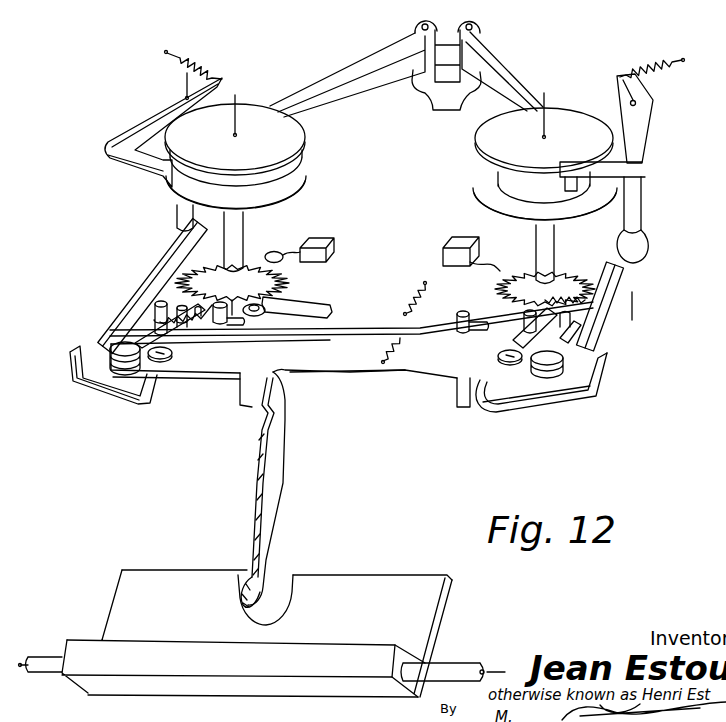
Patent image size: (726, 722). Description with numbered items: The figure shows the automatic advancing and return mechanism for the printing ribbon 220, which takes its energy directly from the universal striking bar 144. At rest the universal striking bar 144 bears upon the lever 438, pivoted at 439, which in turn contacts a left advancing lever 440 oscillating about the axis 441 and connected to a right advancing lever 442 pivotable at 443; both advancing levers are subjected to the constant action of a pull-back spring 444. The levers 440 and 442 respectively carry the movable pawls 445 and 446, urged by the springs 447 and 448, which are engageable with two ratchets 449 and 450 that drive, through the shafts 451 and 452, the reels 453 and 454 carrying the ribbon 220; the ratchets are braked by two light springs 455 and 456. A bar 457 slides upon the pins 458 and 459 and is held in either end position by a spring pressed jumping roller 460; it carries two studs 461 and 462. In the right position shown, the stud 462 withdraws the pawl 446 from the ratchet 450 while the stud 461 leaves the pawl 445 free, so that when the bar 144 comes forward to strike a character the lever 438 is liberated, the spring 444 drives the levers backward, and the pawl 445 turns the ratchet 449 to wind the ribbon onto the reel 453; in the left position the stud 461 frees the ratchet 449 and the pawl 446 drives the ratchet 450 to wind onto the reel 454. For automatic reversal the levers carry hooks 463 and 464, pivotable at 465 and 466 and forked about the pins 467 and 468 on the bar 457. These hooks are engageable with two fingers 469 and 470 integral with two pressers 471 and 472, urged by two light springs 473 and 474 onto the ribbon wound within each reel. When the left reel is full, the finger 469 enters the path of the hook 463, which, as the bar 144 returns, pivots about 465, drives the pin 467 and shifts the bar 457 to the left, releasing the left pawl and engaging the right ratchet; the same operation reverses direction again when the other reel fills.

The universal striking bar 144 is at (430, 613).
The printing ribbon 220 is at (375, 88).
The lever 438 is at (268, 530).
The pivot 439 is at (300, 483).
The left advancing lever 440 is at (293, 360).
The axis 441 is at (203, 373).
The right advancing lever 442 is at (445, 373).
The pivot 443 is at (463, 408).
The pull-back spring 444 is at (407, 302).
The movable pawl 445 is at (147, 310).
The movable pawl 446 is at (585, 318).
The spring 447 is at (183, 313).
The spring 448 is at (603, 293).
The ratchet 449 is at (260, 251).
The ratchet 450 is at (565, 265).
The shaft 451 is at (245, 224).
The shaft 452 is at (540, 238).
The reel 453 is at (292, 181).
The reel 454 is at (490, 189).
The light spring 455 is at (322, 240).
The light spring 456 is at (480, 270).
The bar 457 is at (358, 325).
The pin 458 is at (221, 333).
The pin 459 is at (457, 320).
The spring pressed jumping roller 460 is at (293, 303).
The stud 461 is at (158, 312).
The stud 462 is at (573, 330).
The hook 463 is at (90, 387).
The hook 464 is at (552, 385).
The pivot 465 is at (167, 357).
The pivot 466 is at (515, 363).
The pin 467 is at (172, 310).
The pin 468 is at (525, 320).
The finger 469 is at (137, 323).
The finger 470 is at (641, 236).
The presser 471 is at (153, 112).
The presser 472 is at (647, 109).
The light spring 473 is at (190, 60).
The light spring 474 is at (643, 62).